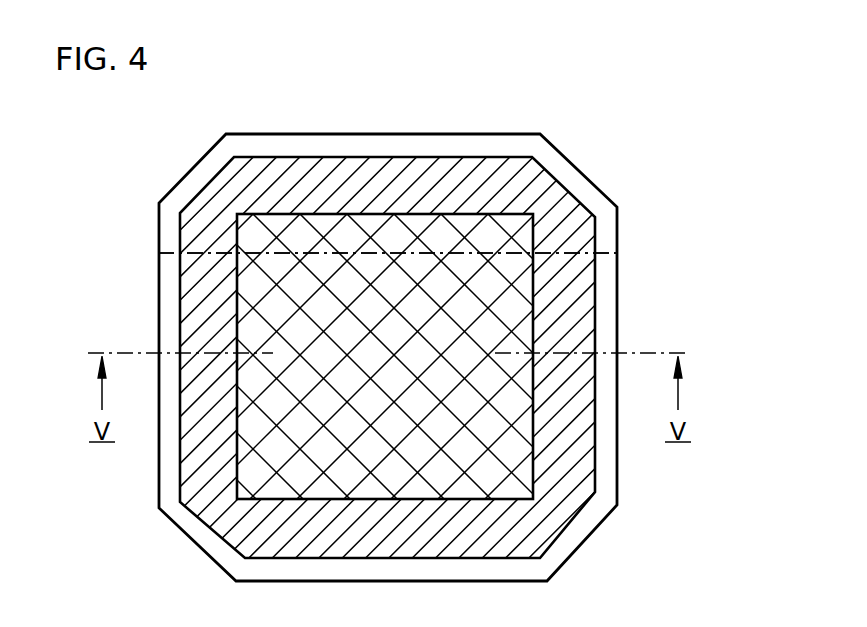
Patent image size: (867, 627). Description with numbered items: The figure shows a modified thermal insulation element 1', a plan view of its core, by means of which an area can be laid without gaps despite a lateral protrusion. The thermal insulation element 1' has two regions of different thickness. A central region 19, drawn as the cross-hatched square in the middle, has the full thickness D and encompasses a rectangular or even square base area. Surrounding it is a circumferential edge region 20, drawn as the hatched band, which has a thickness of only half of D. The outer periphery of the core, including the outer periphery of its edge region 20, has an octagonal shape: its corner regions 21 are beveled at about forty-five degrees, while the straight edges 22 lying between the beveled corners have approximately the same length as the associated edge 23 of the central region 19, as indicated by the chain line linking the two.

The central region 19 is at (320, 257).
The circumferential edge region 20 is at (423, 175).
The corner regions 21 is at (570, 520).
The edges 22 is at (158, 256).
The edge of the central region 23 is at (530, 259).
The thermal insulation element 1' is at (653, 97).